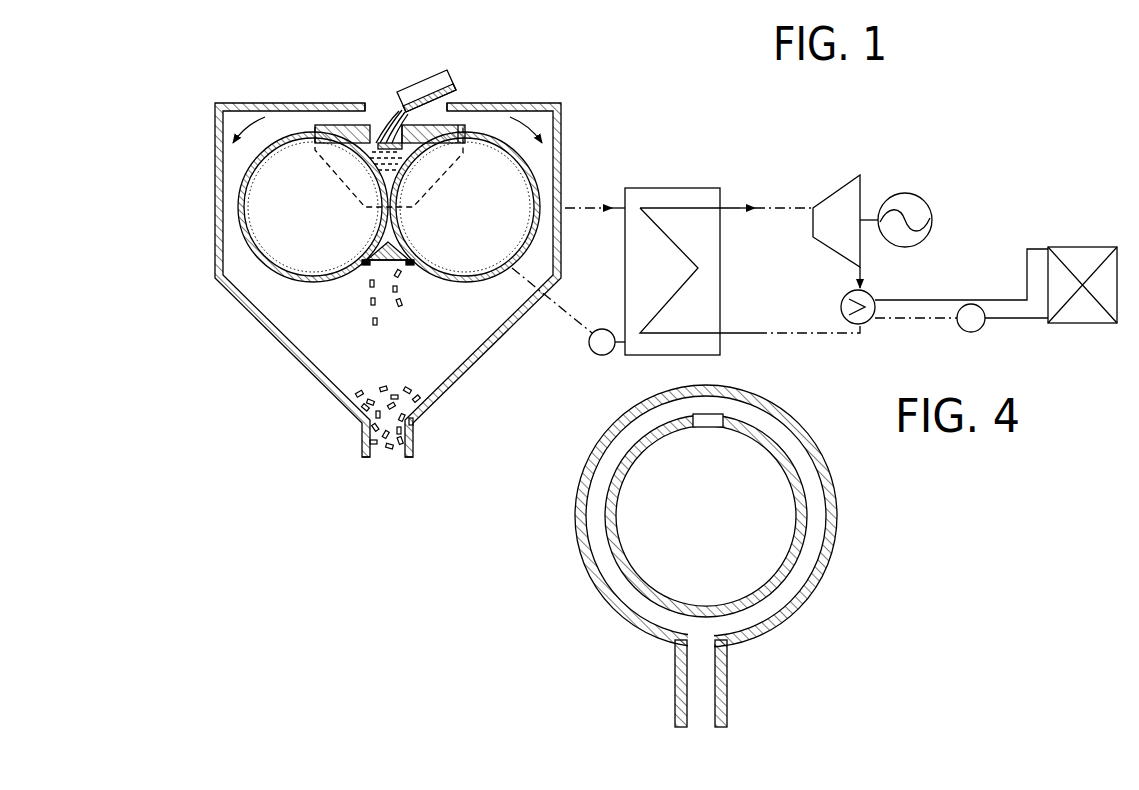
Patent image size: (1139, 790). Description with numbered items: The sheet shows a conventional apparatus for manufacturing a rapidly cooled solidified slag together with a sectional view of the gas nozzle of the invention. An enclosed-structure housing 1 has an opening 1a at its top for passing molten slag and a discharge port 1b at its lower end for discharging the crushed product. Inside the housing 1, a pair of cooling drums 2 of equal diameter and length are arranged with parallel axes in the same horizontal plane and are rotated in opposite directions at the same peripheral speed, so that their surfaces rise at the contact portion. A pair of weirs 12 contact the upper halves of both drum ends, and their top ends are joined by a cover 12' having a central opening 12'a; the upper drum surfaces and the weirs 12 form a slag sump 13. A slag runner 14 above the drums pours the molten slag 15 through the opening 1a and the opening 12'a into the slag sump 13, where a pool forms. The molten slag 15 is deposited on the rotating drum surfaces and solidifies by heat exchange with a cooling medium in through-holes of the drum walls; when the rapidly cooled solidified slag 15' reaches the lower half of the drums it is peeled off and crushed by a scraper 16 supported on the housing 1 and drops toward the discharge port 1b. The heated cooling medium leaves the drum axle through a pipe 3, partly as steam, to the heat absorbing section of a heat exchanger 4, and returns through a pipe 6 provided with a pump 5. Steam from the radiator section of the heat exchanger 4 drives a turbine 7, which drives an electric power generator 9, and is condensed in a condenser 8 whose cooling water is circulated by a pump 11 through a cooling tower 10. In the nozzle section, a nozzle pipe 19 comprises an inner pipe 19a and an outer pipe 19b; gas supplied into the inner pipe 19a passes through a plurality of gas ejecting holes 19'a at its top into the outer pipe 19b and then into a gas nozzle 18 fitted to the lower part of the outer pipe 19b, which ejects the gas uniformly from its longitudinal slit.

In FIG. 1, the housing 1 is at (524, 98).
In FIG. 1, the opening 1a is at (367, 103).
In FIG. 1, the discharge port 1b is at (400, 457).
In FIG. 1, the cooling drums 2 is at (312, 282).
In FIG. 1, the pipe 3 is at (593, 202).
In FIG. 1, the heat exchanger 4 is at (665, 188).
In FIG. 1, the pump 5 is at (601, 356).
In FIG. 1, the pipe 6 is at (548, 312).
In FIG. 1, the turbine 7 is at (830, 193).
In FIG. 1, the condenser 8 is at (866, 323).
In FIG. 1, the electric power generator 9 is at (905, 193).
In FIG. 1, the cooling tower 10 is at (1080, 247).
In FIG. 1, the pump 11 is at (971, 333).
In FIG. 1, the weirs 12 is at (410, 167).
In FIG. 1, the cover 12' is at (477, 100).
In FIG. 1, the opening 12'a is at (421, 164).
In FIG. 1, the slag sump 13 is at (366, 162).
In FIG. 1, the slag runner 14 is at (427, 72).
In FIG. 1, the molten slag 15 is at (392, 96).
In FIG. 1, the rapidly cooled solidified slag 15' is at (391, 359).
In FIG. 1, the scraper 16 is at (382, 242).
In FIG. 4, the gas nozzle 18 is at (727, 700).
In FIG. 4, the nozzle pipe 19 is at (731, 520).
In FIG. 4, the inner pipe 19a is at (800, 520).
In FIG. 4, the outer pipe 19b is at (813, 452).
In FIG. 4, the gas ejecting holes 19'a is at (714, 449).